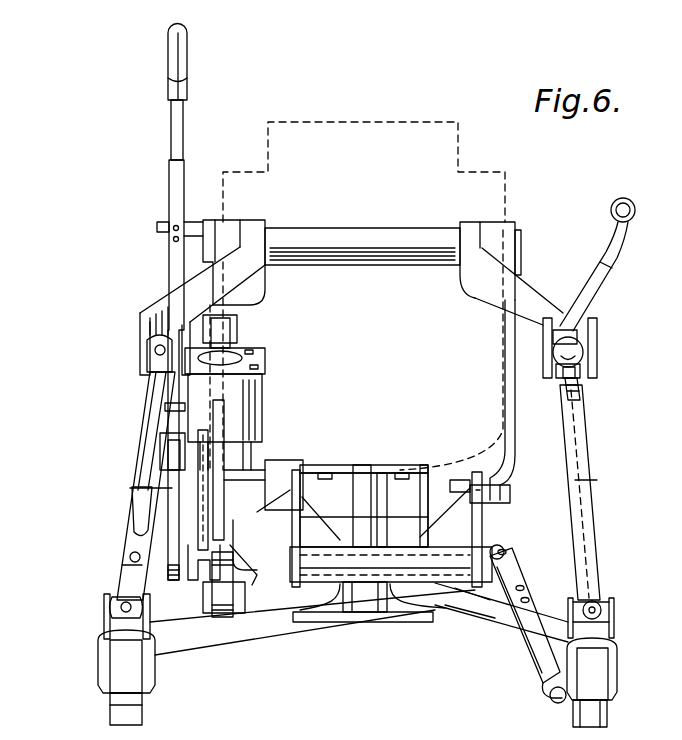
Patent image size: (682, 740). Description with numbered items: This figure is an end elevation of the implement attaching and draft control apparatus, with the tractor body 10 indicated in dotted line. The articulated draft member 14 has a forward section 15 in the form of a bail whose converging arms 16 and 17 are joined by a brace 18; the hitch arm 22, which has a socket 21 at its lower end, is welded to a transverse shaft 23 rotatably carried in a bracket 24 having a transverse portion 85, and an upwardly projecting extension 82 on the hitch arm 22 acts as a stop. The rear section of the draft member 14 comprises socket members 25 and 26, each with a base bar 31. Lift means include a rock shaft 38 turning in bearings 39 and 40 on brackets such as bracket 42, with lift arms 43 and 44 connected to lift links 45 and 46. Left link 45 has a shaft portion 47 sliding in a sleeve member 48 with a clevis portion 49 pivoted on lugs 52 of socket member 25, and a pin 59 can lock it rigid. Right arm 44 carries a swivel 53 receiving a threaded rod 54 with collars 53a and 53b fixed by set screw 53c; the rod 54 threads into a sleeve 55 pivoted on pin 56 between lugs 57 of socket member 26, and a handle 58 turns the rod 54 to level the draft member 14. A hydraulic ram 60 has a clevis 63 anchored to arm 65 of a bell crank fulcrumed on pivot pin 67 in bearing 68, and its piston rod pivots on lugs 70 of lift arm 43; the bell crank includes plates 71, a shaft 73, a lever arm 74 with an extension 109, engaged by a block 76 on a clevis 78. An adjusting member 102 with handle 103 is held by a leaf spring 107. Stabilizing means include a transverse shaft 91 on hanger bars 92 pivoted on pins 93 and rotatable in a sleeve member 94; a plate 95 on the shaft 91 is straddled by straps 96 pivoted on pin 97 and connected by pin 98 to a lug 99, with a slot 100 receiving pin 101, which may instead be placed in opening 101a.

The body 10 is at (392, 130).
The draft member 14 is at (78, 703).
The forward section 15 is at (252, 667).
The arm 16 is at (275, 645).
The arm 17 is at (490, 648).
The brace 18 is at (335, 625).
The socket 21 is at (122, 712).
The hitch arm 22 is at (362, 625).
The transverse shaft 23 is at (390, 520).
The bracket 24 is at (430, 470).
The socket member 25 is at (140, 693).
The socket member 26 is at (608, 705).
The bar 31 is at (592, 712).
The rock shaft 38 is at (350, 228).
The bearing 39 is at (222, 220).
The bearing 40 is at (492, 222).
The bracket 42 is at (514, 440).
The lift arm 43 is at (152, 316).
The lift arm 44 is at (530, 290).
The lift link 45 is at (128, 462).
The lift link 46 is at (590, 466).
The shaft portion 47 is at (152, 408).
The sleeve member 48 is at (132, 521).
The clevis portion 49 is at (120, 562).
The lugs 52 is at (104, 604).
The swivel 53 is at (590, 335).
The collar 53a is at (568, 340).
The collar 53b is at (582, 372).
The set screw 53c is at (566, 376).
The rod 54 is at (580, 392).
The sleeve 55 is at (596, 512).
The pin 56 is at (609, 622).
The lugs 57 is at (614, 603).
The handle 58 is at (613, 264).
The pin 59 is at (130, 552).
The hydraulic ram 60 is at (262, 410).
The clevis 63 is at (235, 612).
The arm 65 is at (222, 617).
The pivot pin 67 is at (240, 540).
The bearing 68 is at (245, 352).
The lugs 70 is at (231, 331).
The plates 71 is at (192, 560).
The shaft 73 is at (186, 525).
The lever arm 74 is at (160, 490).
The block 76 is at (170, 472).
The clevis 78 is at (160, 448).
The extension 82 is at (361, 465).
The transverse portion 85 is at (385, 465).
The transverse shaft 91 is at (496, 546).
The hanger bars 92 is at (290, 500).
The pins 93 is at (275, 465).
The sleeve member 94 is at (391, 564).
The plate 95 is at (504, 612).
The straps 96 is at (530, 628).
The pin 97 is at (507, 552).
The pin 98 is at (546, 678).
The lug 99 is at (554, 702).
The slot 100 is at (488, 598).
The pin 101 is at (524, 587).
The opening 101a is at (529, 599).
The adjusting member 102 is at (184, 112).
The handle 103 is at (168, 63).
The leaf spring 107 is at (169, 193).
The extension 109 is at (168, 570).